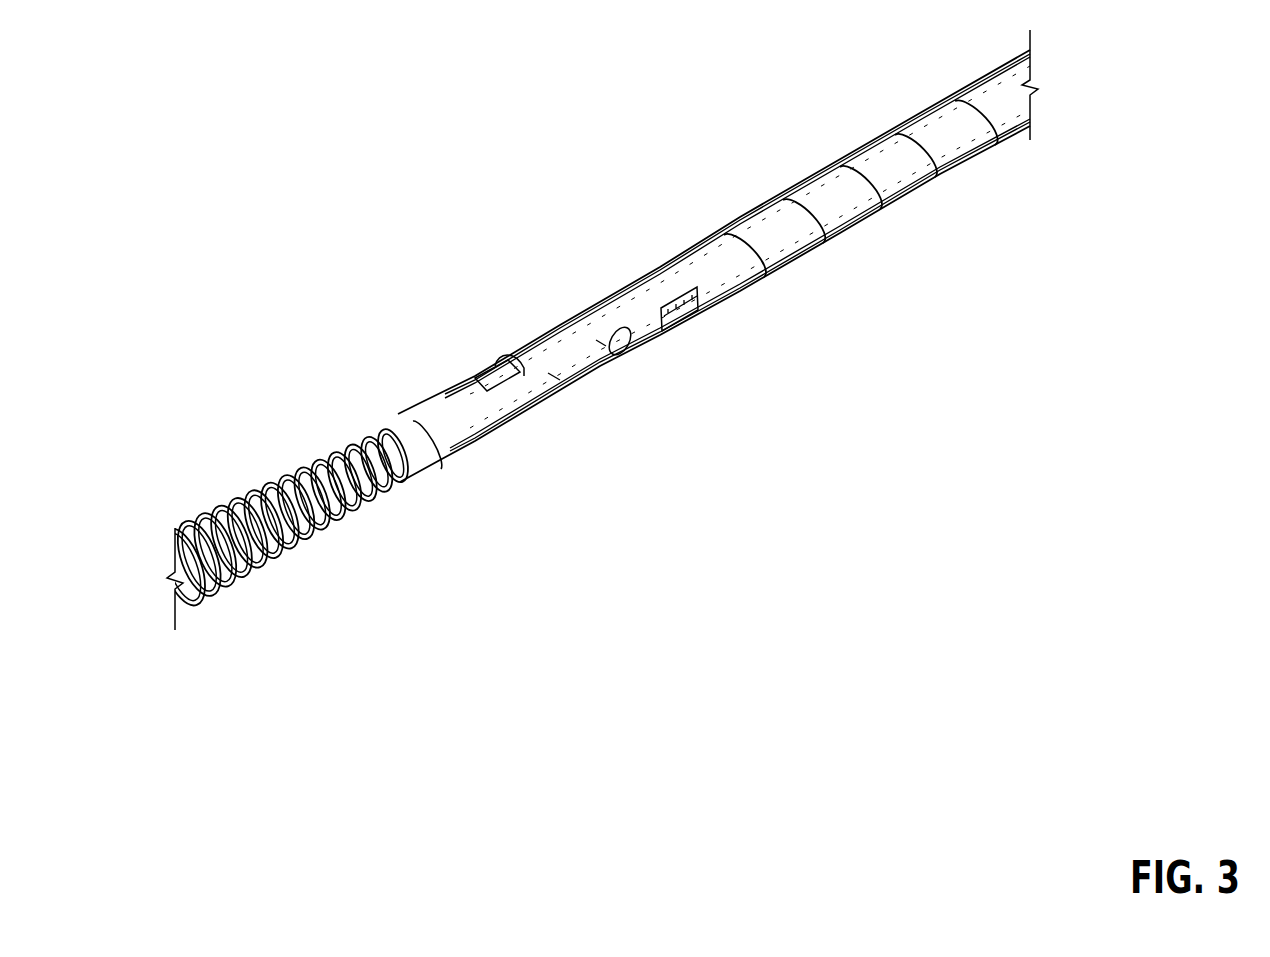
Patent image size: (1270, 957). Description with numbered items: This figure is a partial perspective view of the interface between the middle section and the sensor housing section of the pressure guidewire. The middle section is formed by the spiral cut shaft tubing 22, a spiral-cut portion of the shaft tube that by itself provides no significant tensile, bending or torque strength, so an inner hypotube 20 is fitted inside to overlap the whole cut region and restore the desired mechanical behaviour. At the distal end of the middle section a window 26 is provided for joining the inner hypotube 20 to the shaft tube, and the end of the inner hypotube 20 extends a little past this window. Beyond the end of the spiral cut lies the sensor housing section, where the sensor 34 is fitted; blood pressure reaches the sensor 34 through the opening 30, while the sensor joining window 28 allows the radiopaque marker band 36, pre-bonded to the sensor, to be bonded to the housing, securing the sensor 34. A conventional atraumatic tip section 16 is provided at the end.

The tip section 16 is at (326, 590).
The inner hypotube 20 is at (652, 272).
The spiral cut shaft tubing 22 is at (823, 238).
The window 26 is at (678, 317).
The sensor joining window 28 is at (625, 352).
The opening 30 is at (492, 372).
The sensor 34 is at (553, 376).
The radiopaque marker band 36 is at (600, 343).